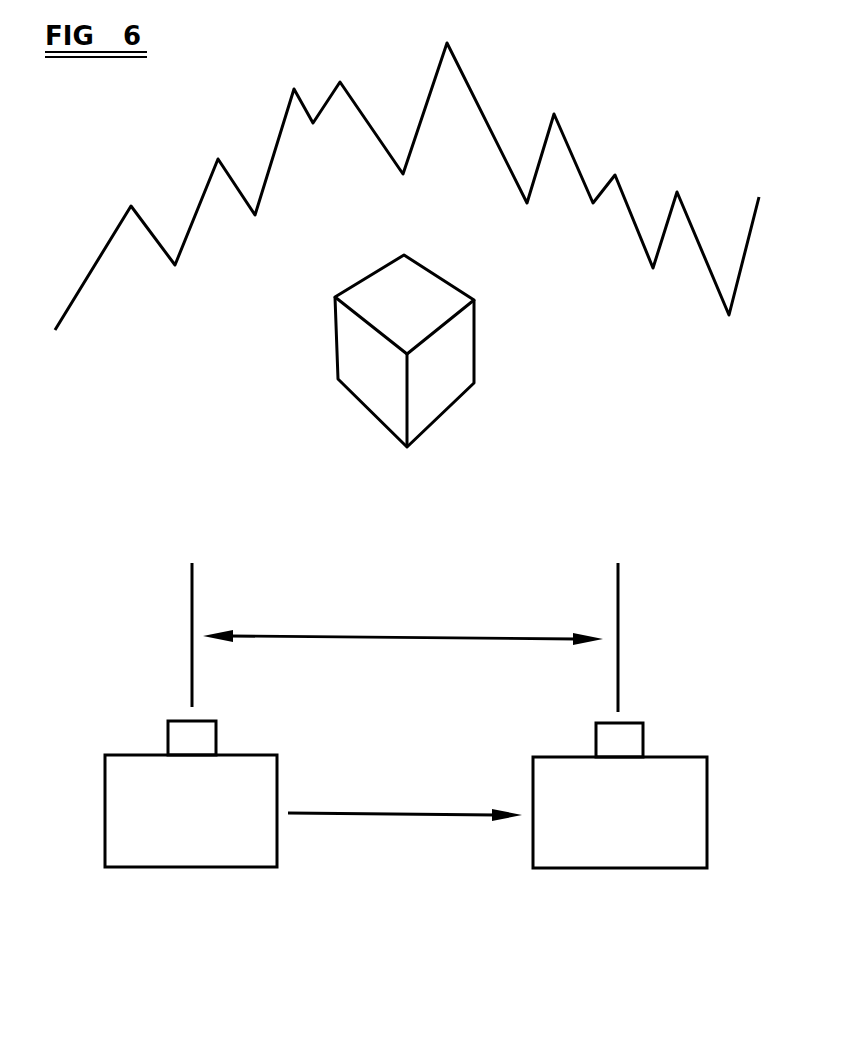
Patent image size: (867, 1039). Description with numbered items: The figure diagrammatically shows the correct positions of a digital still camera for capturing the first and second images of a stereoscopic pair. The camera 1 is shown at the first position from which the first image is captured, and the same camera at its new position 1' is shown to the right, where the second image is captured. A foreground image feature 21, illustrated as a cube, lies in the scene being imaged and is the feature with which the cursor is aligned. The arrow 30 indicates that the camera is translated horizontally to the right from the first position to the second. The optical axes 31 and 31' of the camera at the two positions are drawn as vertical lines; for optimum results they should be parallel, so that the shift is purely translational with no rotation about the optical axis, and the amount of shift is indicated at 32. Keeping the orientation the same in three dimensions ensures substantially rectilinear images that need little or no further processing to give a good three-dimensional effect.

The camera 1 is at (159, 861).
The camera at new position 1' is at (641, 865).
The image feature 21 is at (448, 376).
The arrow 30 is at (405, 801).
The optical axis 31 is at (102, 574).
The optical axis 31' is at (701, 623).
The amount of shift 32 is at (403, 624).